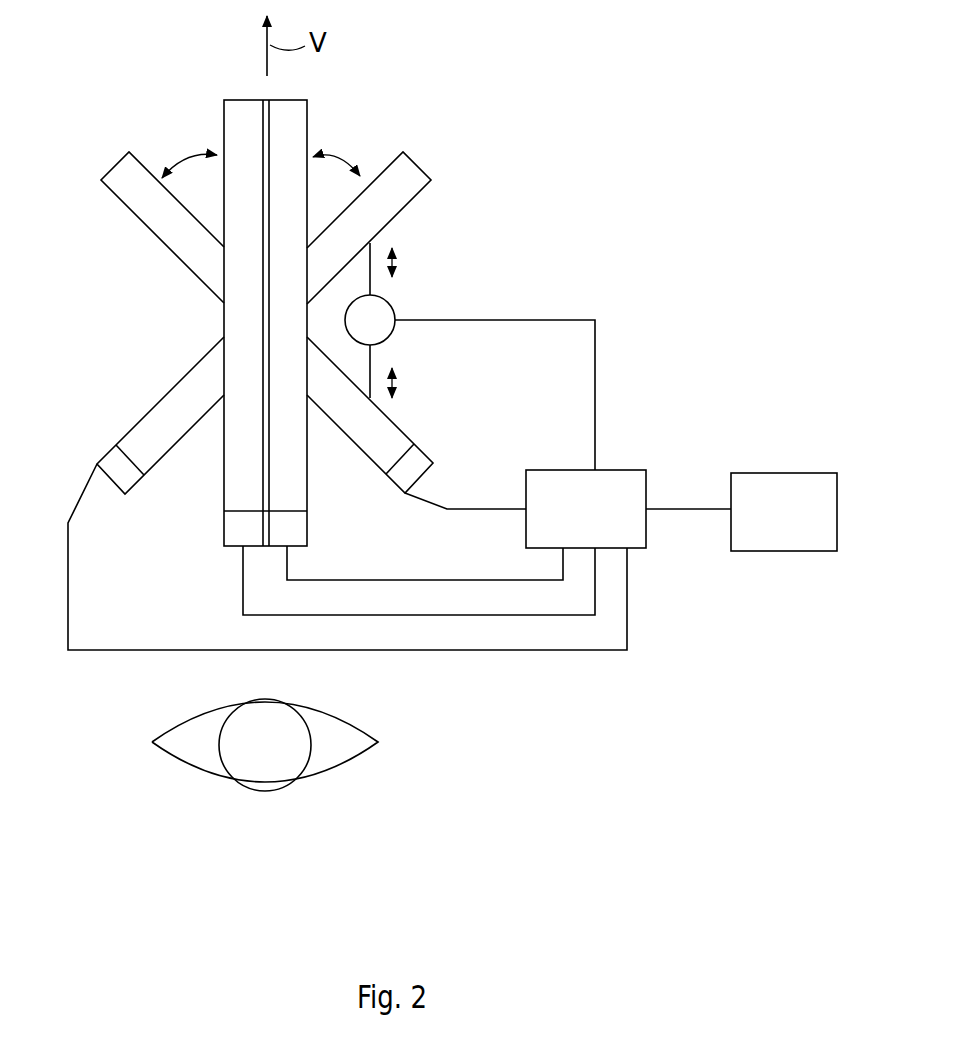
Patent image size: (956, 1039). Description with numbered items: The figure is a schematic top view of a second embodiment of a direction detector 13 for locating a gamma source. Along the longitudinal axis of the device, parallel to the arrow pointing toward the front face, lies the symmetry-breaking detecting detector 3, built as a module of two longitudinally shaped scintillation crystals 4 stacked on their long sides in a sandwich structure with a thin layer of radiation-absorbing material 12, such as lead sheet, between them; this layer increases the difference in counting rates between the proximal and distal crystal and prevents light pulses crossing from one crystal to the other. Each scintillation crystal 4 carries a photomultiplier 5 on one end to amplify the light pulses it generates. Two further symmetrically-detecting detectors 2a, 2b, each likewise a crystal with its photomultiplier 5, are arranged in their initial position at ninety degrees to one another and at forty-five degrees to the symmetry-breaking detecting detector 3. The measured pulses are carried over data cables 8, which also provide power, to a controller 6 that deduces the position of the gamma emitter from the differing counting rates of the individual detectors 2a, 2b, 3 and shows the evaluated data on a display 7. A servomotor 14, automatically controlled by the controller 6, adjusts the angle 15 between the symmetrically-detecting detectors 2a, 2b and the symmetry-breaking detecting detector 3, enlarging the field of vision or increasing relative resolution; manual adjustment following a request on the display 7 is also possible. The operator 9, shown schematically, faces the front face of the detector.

The symmetrically-detecting detector 2a is at (404, 430).
The symmetrically-detecting detector 2b is at (122, 432).
The symmetry-breaking detecting detector 3 is at (312, 109).
The scintillation crystal 4 is at (123, 173).
The photomultiplier 5 is at (108, 463).
The controller 6 is at (586, 509).
The display 7 is at (784, 512).
The data cable 8 is at (495, 505).
The operator 9 is at (265, 780).
The radiation-absorbing material 12 is at (270, 483).
The direction detector 13 is at (547, 203).
The servomotor 14 is at (395, 312).
The angle 15 is at (185, 157).